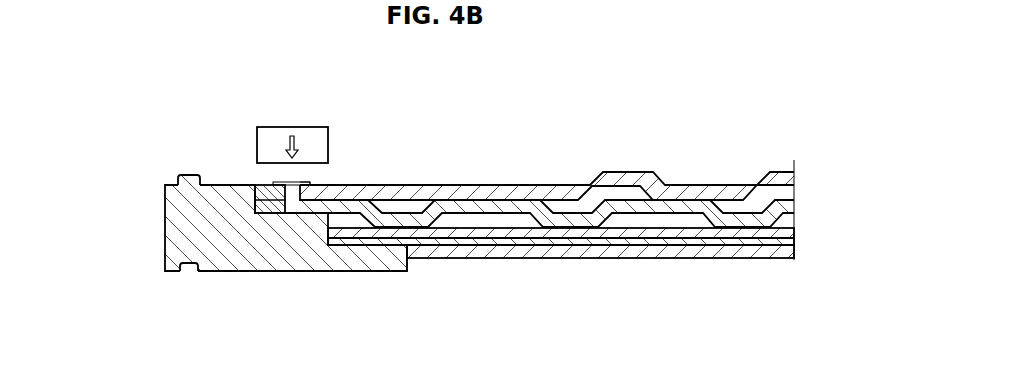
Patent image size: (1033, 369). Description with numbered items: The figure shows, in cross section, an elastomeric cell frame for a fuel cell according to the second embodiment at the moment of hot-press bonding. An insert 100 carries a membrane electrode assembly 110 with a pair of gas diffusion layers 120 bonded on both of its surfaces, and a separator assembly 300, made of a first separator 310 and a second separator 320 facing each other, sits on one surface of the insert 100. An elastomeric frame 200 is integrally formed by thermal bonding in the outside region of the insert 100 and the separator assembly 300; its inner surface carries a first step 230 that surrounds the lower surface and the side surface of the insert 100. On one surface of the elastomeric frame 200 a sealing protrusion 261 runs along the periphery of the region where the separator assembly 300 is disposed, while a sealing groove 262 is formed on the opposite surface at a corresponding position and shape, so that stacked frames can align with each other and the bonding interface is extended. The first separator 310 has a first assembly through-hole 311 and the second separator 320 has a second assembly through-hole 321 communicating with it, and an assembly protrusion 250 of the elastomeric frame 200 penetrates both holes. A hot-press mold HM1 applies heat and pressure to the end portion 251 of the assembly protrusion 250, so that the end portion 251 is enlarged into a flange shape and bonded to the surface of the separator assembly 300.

The insert 100 is at (458, 268).
The membrane electrode assembly 110 is at (620, 243).
The gas diffusion layers 120 is at (579, 250).
The elastomeric frame 200 is at (173, 231).
The first step 230 is at (390, 238).
The assembly protrusion 250 is at (297, 183).
The end portion 251 is at (311, 176).
The sealing protrusion 261 is at (187, 177).
The sealing groove 262 is at (192, 268).
The separator assembly 300 is at (458, 180).
The first separator 310 is at (483, 202).
The first assembly through-hole 311 is at (286, 199).
The second separator 320 is at (473, 113).
The second assembly through-hole 321 is at (287, 184).
The hot-press mold HM1 is at (283, 127).